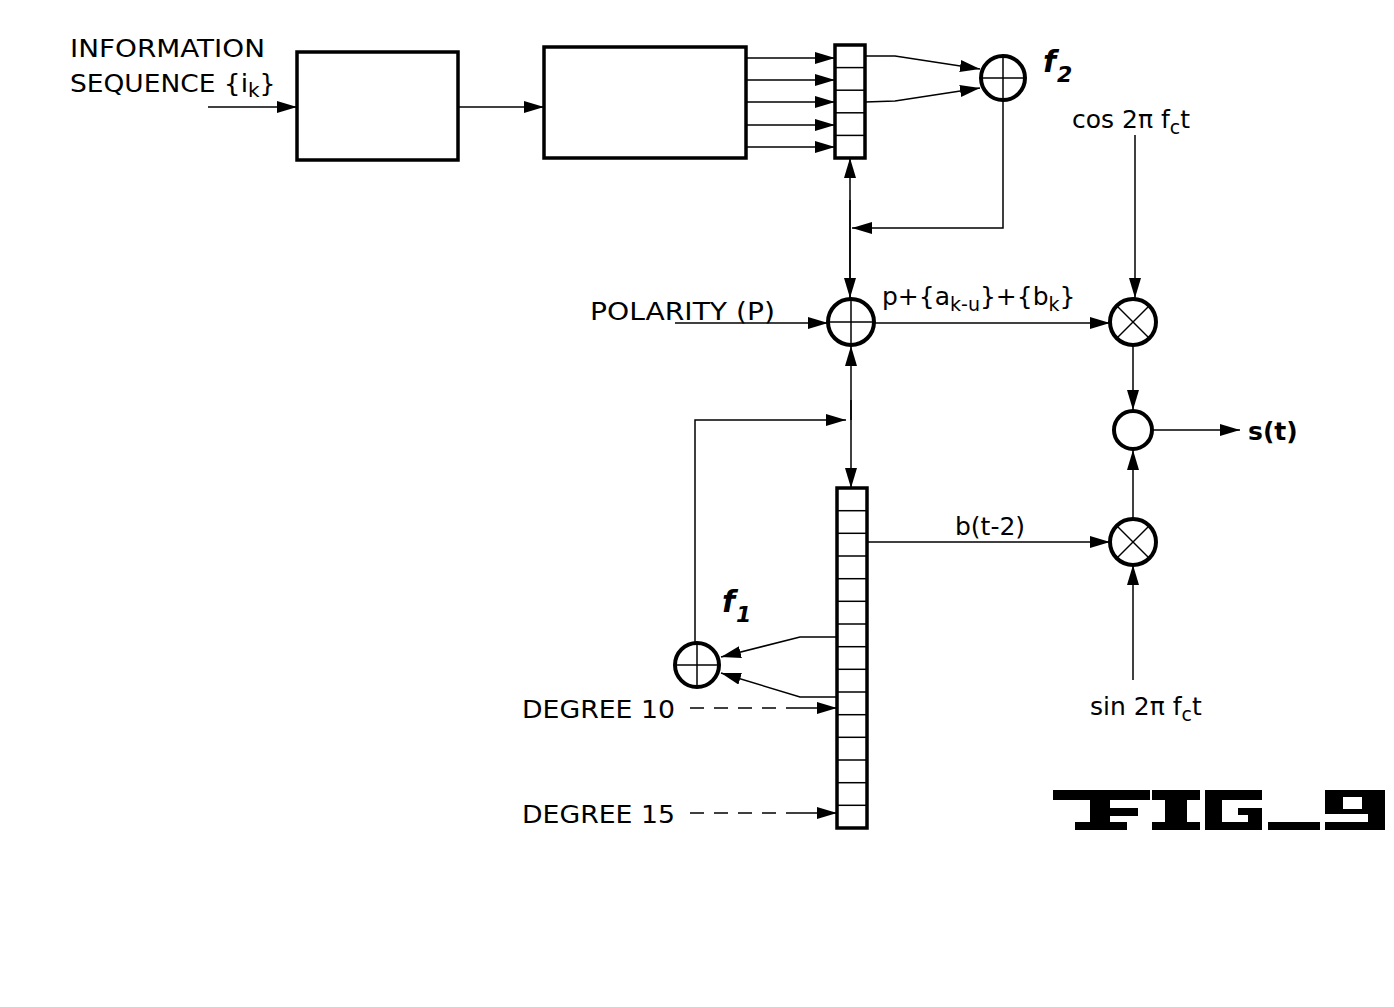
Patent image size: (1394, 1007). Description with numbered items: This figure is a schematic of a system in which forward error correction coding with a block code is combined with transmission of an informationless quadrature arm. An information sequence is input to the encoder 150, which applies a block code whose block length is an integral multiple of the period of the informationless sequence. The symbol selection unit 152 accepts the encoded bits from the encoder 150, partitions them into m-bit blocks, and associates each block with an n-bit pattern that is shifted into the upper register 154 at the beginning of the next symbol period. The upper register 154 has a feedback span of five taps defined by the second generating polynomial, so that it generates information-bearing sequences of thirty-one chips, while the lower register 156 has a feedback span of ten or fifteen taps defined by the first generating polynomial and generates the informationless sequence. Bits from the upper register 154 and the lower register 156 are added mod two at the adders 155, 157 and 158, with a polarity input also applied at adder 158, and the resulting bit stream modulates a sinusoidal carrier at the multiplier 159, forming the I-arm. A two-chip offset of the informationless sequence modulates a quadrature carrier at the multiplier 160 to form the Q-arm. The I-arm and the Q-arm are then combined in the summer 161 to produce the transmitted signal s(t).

The encoder 150 is at (390, 161).
The symbol selection unit 152 is at (683, 159).
The upper register 154 is at (896, 107).
The mod 2 adder 155 is at (1028, 86).
The lower register 156 is at (945, 621).
The mod 2 adder 157 is at (681, 647).
The mod 2 adder 158 is at (940, 352).
The sinusoidal carrier modulator 159 is at (1222, 290).
The quadrature carrier modulator 160 is at (1232, 530).
The summer 161 is at (1152, 412).